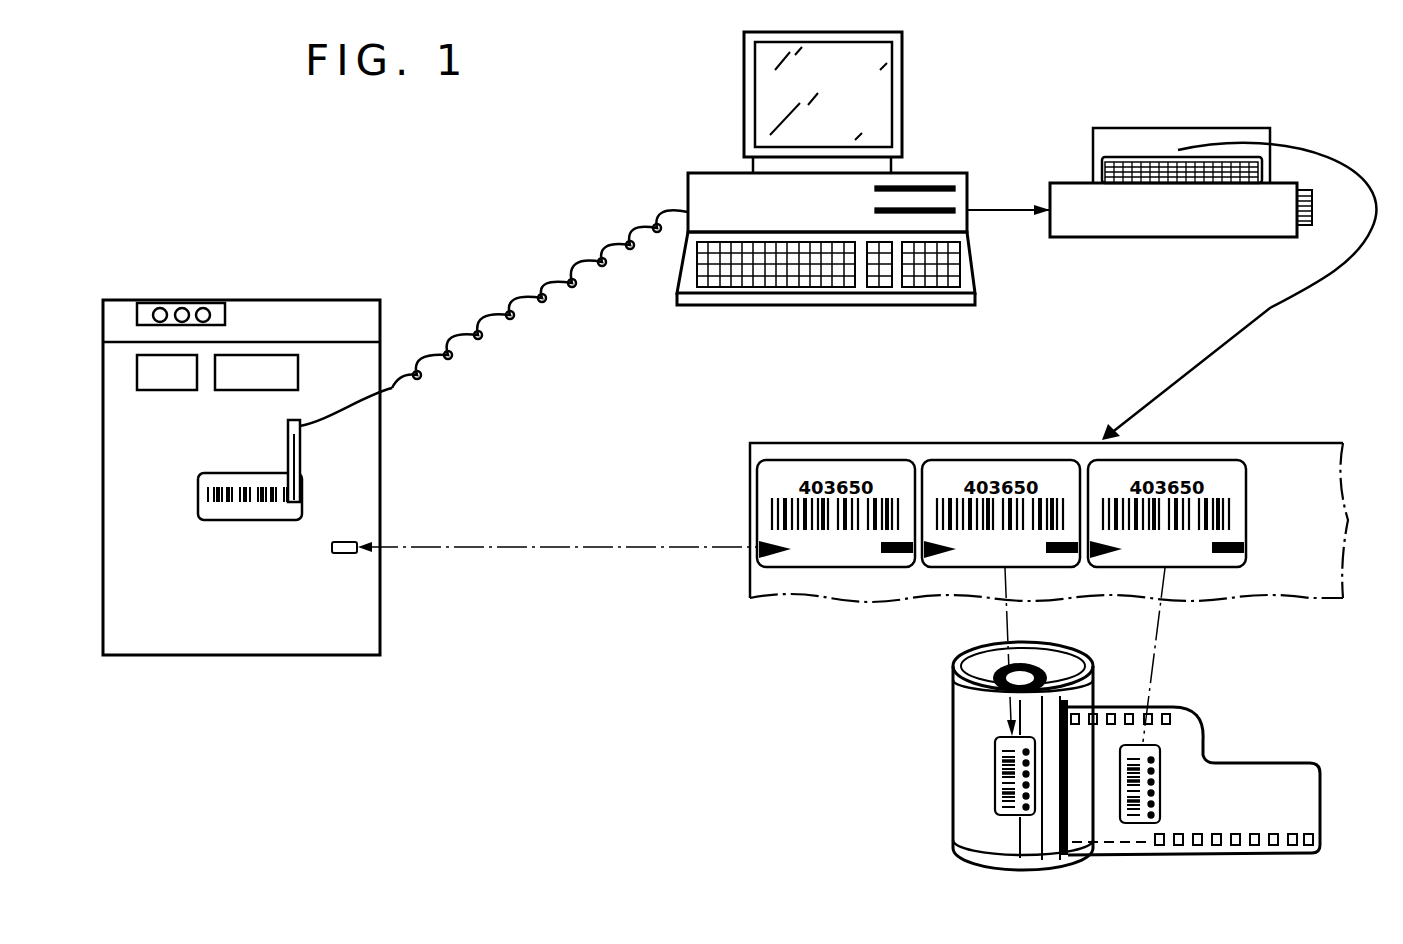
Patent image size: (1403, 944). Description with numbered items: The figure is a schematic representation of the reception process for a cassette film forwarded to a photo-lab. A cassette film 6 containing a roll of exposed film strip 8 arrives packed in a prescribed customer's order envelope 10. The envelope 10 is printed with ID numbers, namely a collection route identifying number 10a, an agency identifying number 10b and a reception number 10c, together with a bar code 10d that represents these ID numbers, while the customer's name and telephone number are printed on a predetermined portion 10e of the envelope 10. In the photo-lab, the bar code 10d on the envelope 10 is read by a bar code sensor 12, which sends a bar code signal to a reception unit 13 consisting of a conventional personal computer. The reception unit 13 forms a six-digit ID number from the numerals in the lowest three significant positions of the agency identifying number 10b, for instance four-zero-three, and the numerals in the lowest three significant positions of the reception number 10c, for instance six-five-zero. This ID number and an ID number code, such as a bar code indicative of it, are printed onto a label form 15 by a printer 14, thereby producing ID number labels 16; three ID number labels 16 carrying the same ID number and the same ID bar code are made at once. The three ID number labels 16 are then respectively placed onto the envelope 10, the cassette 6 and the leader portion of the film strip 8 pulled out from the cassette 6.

The cassette film 6 is at (953, 724).
The film strip 8 is at (1175, 738).
The customer's order envelope 10 is at (246, 678).
The collection route identifying number 10a is at (160, 391).
The agency identifying number 10b is at (247, 391).
The reception number 10c is at (353, 362).
The bar code 10d is at (235, 506).
The predetermined portion of the envelope 10e is at (148, 304).
The bar code sensor 12 is at (300, 456).
The reception unit 13 is at (940, 160).
The printer 14 is at (1127, 230).
The label form 15 is at (1150, 157).
The ID number label 16 is at (1113, 160).